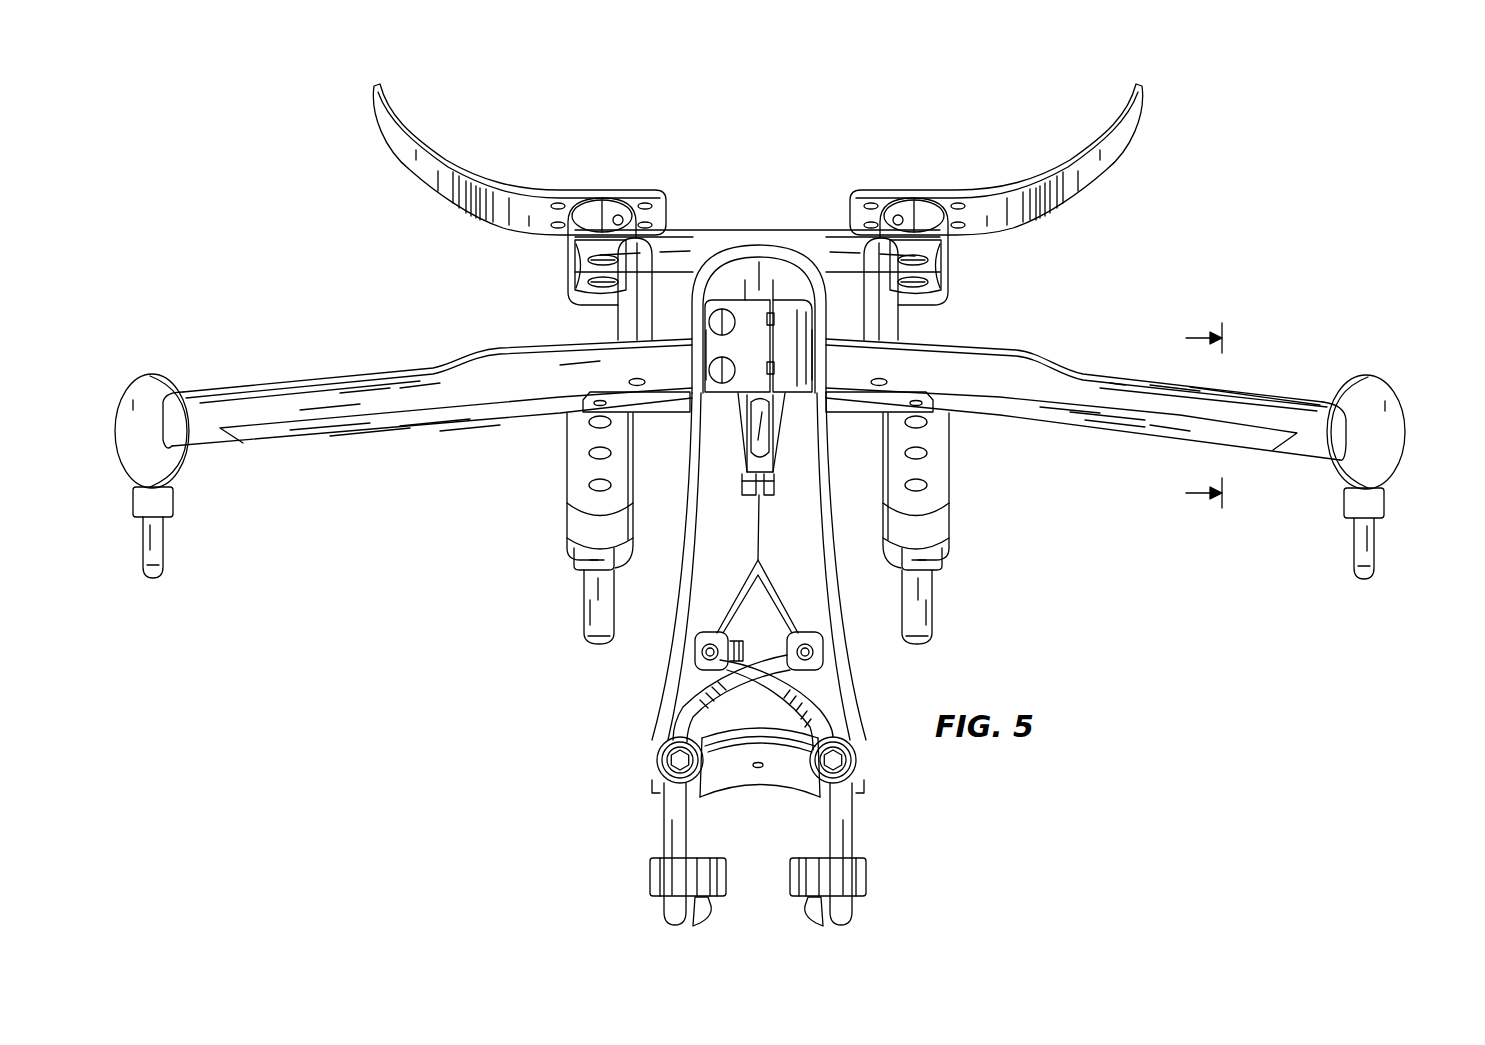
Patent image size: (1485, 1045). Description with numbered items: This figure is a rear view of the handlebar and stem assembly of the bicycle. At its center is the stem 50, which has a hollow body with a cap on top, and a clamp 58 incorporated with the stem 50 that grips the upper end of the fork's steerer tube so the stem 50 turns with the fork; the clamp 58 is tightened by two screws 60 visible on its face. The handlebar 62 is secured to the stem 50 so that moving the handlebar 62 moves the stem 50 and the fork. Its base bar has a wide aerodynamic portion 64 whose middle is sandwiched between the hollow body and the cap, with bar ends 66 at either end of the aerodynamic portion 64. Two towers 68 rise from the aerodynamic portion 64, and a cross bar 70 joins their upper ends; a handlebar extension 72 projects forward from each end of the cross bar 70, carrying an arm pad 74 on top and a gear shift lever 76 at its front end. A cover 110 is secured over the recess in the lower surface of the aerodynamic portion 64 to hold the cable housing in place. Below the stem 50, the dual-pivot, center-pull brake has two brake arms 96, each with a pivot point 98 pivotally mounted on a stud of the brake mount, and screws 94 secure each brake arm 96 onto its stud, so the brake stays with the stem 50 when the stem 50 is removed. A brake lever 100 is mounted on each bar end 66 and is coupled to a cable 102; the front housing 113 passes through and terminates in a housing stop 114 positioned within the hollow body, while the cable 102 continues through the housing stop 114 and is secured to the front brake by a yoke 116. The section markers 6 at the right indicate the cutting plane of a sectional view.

The stem 50 is at (626, 686).
The clamp 58 is at (750, 322).
The screws 60 is at (727, 380).
The handlebar 62 is at (918, 117).
The aerodynamic portion 64 is at (1026, 368).
The bar ends 66 is at (1392, 436).
The towers 68 is at (628, 318).
The cross bar 70 is at (688, 244).
The handlebar extension 72 is at (950, 305).
The arm pads 74 is at (1126, 144).
The gear shift lever 76 is at (936, 630).
The screws 94 is at (677, 760).
The brake arms 96 is at (792, 700).
The pivot point 98 is at (848, 765).
The brake lever 100 is at (1358, 575).
The cable 102 is at (764, 538).
The cover 110 is at (287, 437).
The front housing 113 is at (784, 418).
The housing stop 114 is at (742, 484).
The yoke 116 is at (781, 608).
The section line 6- 6 is at (1192, 417).